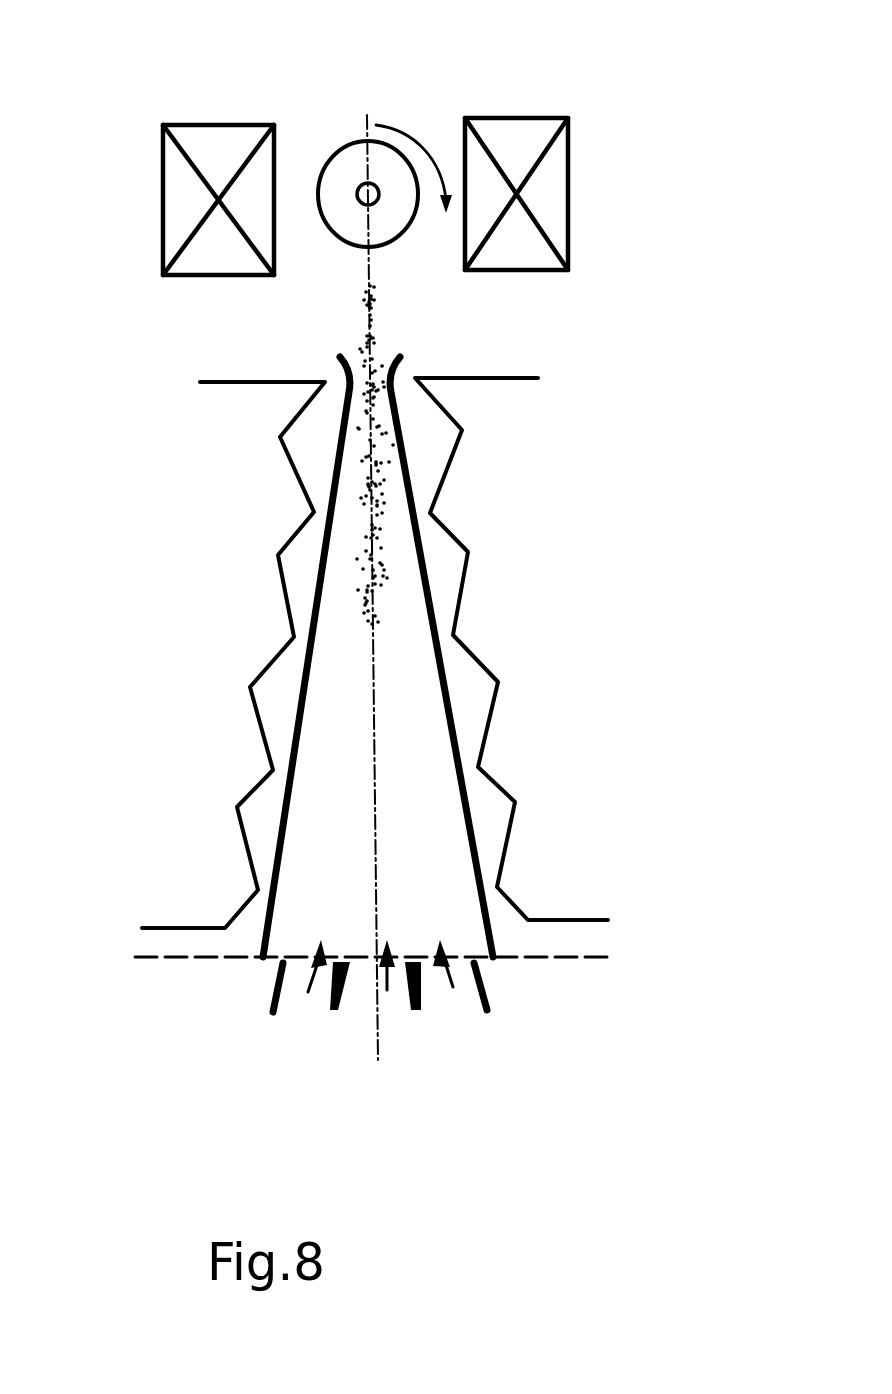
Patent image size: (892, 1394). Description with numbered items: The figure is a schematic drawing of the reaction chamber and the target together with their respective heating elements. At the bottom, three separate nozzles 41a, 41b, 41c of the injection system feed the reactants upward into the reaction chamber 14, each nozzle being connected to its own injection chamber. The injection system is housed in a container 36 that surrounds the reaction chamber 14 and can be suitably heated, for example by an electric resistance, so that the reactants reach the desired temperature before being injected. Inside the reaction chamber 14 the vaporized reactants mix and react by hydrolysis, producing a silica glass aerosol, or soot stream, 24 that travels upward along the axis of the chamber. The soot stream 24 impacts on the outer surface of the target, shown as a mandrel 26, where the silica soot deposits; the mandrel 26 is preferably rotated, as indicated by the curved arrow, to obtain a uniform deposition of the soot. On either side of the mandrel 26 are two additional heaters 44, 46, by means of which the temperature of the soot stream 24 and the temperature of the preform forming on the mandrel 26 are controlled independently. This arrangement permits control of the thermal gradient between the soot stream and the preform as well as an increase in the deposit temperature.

The reaction chamber 14 is at (405, 705).
The silica glass aerosol 24 is at (362, 317).
The mandrel 26 is at (350, 178).
The container 36 is at (277, 650).
The nozzle 41a is at (312, 992).
The nozzle 41b is at (387, 1013).
The nozzle 41c is at (463, 995).
The heater 44 is at (183, 185).
The heater 46 is at (555, 175).